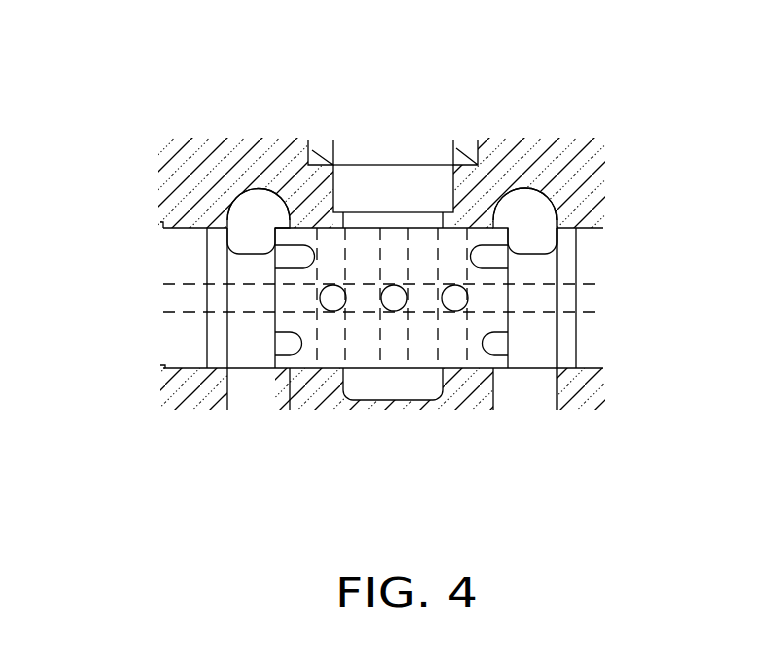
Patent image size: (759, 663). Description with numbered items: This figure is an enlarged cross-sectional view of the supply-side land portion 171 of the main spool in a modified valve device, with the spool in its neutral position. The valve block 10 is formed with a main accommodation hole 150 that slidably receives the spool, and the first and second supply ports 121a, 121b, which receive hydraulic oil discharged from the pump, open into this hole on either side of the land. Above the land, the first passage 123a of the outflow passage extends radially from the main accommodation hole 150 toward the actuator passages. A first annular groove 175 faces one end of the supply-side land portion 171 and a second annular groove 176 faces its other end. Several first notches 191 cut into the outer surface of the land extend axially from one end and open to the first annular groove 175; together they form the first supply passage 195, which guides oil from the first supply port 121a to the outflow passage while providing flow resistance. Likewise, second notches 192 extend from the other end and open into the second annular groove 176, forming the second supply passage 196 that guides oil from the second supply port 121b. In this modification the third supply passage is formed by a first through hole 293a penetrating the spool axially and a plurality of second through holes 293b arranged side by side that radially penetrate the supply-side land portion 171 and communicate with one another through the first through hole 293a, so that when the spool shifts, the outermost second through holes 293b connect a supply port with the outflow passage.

The valve block 10 is at (203, 150).
The first passage 123a is at (313, 182).
The second supply passage 196 is at (265, 220).
The first supply passage 195 is at (510, 218).
The second annular groove 176 is at (252, 240).
The first annular groove 175 is at (523, 248).
The main accommodation hole 150 is at (592, 234).
The second notches 192 is at (290, 343).
The first notches 191 is at (497, 340).
The first through hole 293a is at (305, 316).
The second through holes 293b is at (337, 308).
The second supply port 121b is at (283, 388).
The first supply port 121a is at (497, 390).
The supply-side land portion 171 is at (500, 355).